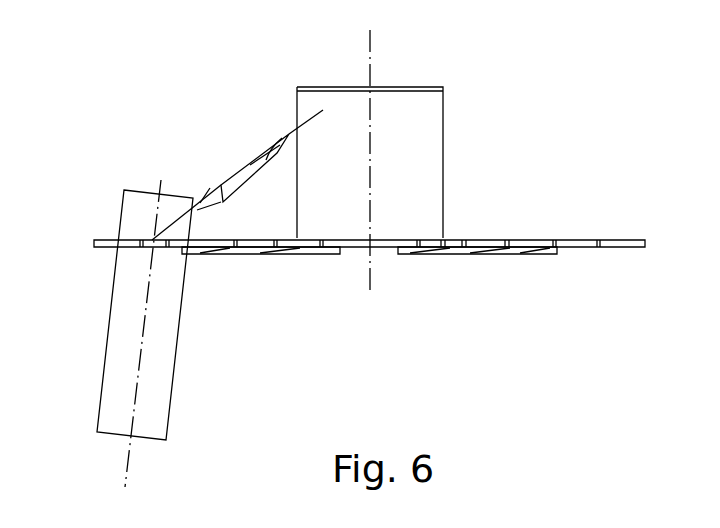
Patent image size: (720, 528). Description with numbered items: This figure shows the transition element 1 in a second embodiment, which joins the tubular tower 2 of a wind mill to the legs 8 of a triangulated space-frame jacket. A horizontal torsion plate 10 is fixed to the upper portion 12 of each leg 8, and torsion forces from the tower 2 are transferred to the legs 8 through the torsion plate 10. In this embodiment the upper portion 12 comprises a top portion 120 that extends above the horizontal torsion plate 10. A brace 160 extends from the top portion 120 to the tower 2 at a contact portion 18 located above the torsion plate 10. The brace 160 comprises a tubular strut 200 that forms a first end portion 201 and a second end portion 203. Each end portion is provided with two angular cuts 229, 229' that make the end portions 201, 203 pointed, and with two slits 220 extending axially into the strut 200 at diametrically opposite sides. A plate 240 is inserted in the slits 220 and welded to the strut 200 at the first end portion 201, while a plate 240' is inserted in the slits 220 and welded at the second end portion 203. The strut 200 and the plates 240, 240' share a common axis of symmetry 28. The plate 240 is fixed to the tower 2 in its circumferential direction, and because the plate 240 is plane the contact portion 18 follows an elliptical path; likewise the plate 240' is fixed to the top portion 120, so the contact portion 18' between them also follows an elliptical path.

The transition element 1 is at (205, 87).
The tower 2 is at (467, 83).
The leg 8 is at (214, 364).
The horizontal torsion plate 10 is at (513, 239).
The upper portion 12 is at (117, 257).
The contact portion 18 is at (262, 75).
The contact portion 18' is at (216, 254).
The axis of symmetry 28 is at (165, 238).
The top portion 120 is at (125, 207).
The brace 160 is at (245, 200).
The tubular strut 200 is at (233, 173).
The first end portion 201 is at (267, 143).
The second end portion 203 is at (212, 185).
The slit 220 is at (247, 163).
The angular cut 229 is at (335, 247).
The angular cut 229' is at (260, 271).
The plate 240 is at (254, 114).
The plate 240' is at (164, 187).